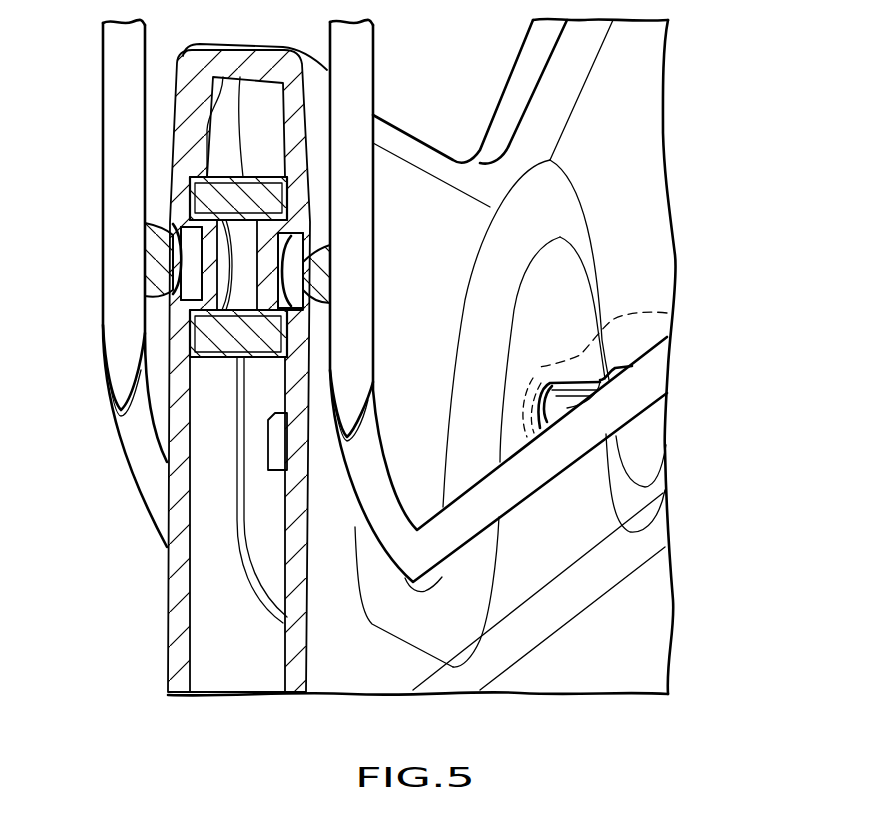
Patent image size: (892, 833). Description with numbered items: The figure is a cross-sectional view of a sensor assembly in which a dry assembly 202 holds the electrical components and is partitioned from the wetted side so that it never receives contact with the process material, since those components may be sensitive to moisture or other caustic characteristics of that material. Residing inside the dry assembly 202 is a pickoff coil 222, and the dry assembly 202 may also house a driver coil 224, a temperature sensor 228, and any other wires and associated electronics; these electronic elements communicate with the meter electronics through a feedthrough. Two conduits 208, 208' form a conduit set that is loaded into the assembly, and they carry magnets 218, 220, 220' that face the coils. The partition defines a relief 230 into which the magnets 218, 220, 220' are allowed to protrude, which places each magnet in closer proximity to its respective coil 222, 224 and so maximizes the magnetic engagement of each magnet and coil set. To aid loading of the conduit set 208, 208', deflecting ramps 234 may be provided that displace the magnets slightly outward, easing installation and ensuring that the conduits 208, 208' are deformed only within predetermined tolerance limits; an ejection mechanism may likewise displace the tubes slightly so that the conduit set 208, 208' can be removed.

The dry assembly 202 is at (655, 77).
The conduit 208 is at (498, 343).
The conduit 208' is at (97, 283).
The magnet 218 is at (546, 420).
The magnet 220 is at (350, 270).
The magnet 220' is at (123, 261).
The pickoff coil 222 is at (218, 187).
The driver coil 224 is at (619, 370).
The temperature sensor 228 is at (277, 447).
The relief 230 is at (178, 295).
The deflecting ramp 234 is at (310, 85).